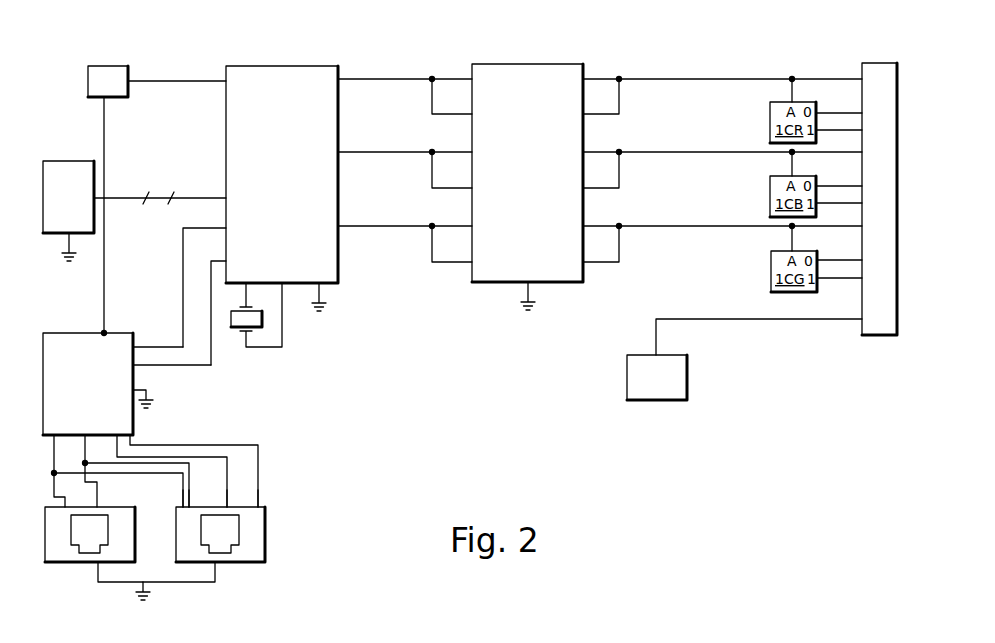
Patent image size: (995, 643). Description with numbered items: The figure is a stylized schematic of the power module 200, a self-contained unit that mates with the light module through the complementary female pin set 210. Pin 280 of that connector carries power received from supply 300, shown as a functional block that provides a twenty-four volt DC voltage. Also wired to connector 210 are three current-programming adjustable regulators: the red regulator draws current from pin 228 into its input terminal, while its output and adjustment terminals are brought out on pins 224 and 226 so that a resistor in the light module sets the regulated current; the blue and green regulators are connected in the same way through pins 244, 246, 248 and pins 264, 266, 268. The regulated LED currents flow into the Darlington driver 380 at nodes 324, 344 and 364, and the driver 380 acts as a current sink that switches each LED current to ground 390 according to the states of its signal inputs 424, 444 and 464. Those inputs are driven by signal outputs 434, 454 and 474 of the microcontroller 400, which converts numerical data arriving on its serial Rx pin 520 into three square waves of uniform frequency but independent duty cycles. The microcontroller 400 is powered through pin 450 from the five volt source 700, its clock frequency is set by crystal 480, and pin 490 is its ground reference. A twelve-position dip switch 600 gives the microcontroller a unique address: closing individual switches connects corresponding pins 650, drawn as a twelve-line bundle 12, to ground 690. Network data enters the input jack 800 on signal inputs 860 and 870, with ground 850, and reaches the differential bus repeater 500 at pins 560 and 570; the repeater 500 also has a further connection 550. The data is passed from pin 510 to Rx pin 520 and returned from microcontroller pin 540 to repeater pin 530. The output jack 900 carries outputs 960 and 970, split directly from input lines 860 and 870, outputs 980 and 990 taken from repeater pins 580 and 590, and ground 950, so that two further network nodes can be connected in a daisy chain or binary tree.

The twelve-conductor bus 12 is at (158, 199).
The power module 200 is at (453, 402).
The female pin set 210 is at (898, 212).
The pin 224 is at (862, 80).
The pin 226 is at (862, 115).
The pin 228 is at (862, 131).
The blue LED power line 244 is at (862, 152).
The blue LED control line 246 is at (862, 188).
The blue LED control line 248 is at (862, 205).
The green LED power line 264 is at (862, 226).
The green LED control line 266 is at (862, 261).
The green LED control line 268 is at (862, 280).
The pin 280 is at (862, 319).
The supply 300 is at (632, 355).
The node 324 is at (619, 78).
The node 344 is at (619, 151).
The node 364 is at (619, 225).
The IC1 380 is at (488, 283).
The ground 390 is at (530, 297).
The microcontroller IC2 400 is at (226, 135).
The signal input 424 is at (432, 78).
The signal output 434 is at (341, 83).
The signal input 444 is at (432, 151).
The pin 450 is at (226, 81).
The signal output 454 is at (341, 156).
The signal input 464 is at (432, 225).
The signal output 474 is at (341, 231).
The crystal 480 is at (246, 310).
The pin 490 is at (321, 300).
The IC3 500 is at (55, 333).
The pin 510 is at (137, 349).
The serial Rx pin 520 is at (226, 228).
The pin 530 is at (137, 370).
The pin 540 is at (226, 261).
The IC3 ground line 550 is at (138, 391).
The pin 560 is at (52, 441).
The pin 570 is at (85, 436).
The pin 580 is at (117, 436).
The pin 590 is at (130, 437).
The dip switch 600 is at (83, 161).
The pins 650 is at (226, 200).
The ground 690 is at (67, 255).
The source of DC power 700 is at (88, 72).
The jack 800 is at (75, 565).
The ground 850 is at (99, 567).
The signal input 860 is at (61, 504).
The signal input 870 is at (97, 504).
The jack 900 is at (267, 547).
The ground 950 is at (217, 567).
The signal output 960 is at (182, 503).
The signal output 970 is at (189, 504).
The signal output 980 is at (227, 504).
The signal output 990 is at (259, 504).